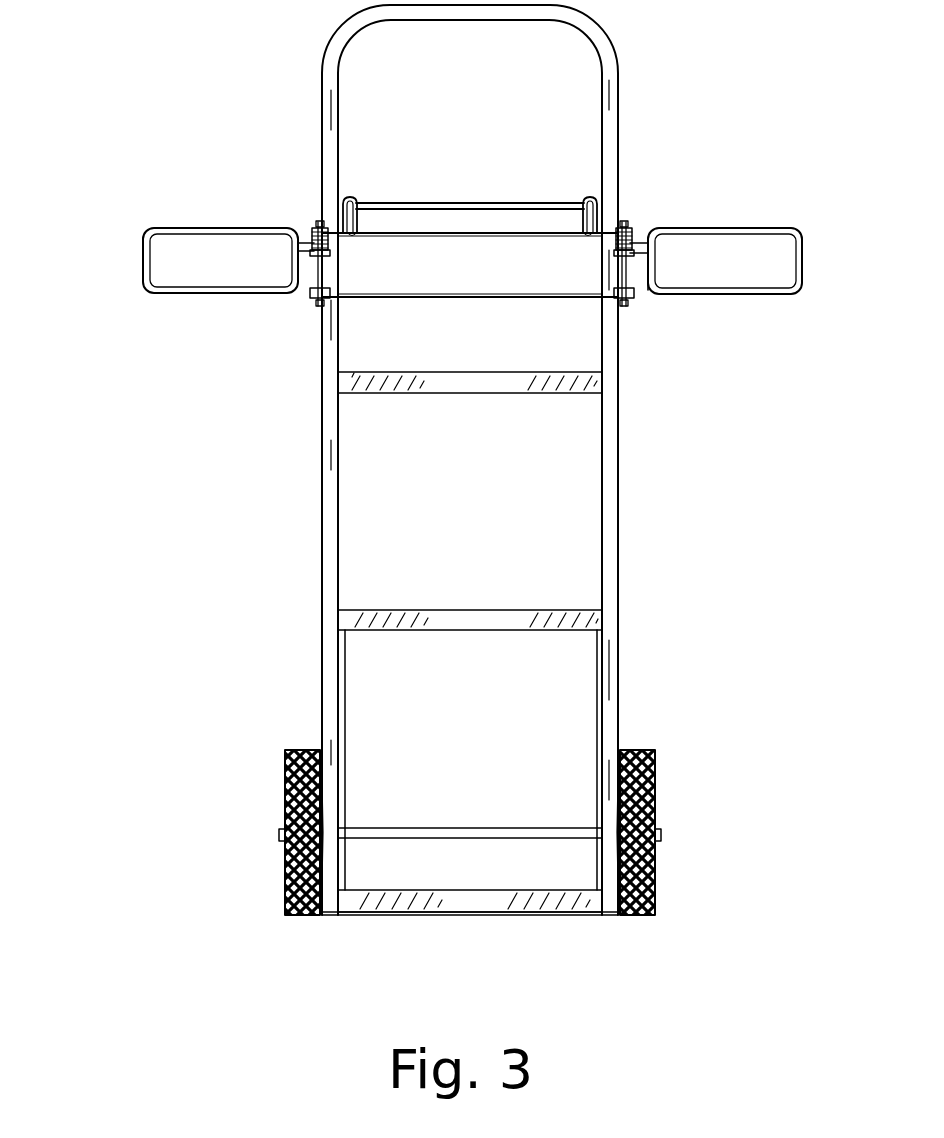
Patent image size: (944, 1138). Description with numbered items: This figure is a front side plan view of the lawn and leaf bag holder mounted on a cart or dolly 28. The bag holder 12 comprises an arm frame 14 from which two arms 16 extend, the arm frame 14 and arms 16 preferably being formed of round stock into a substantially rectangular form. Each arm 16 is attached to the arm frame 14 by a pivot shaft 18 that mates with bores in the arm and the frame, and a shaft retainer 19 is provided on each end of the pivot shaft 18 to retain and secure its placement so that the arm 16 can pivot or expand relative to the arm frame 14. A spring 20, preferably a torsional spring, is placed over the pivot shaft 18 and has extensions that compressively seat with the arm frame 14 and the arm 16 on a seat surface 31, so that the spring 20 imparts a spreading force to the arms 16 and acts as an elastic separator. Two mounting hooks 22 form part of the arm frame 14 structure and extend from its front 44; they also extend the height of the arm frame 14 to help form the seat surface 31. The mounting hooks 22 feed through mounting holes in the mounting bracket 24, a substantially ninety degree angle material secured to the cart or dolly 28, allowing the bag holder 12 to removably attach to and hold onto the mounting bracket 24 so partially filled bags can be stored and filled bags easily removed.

The bag holder 12 is at (470, 293).
The arm frame 14 is at (470, 293).
The arm 16 is at (143, 262).
The pivot shaft 18 is at (311, 270).
The shaft retainer 19 is at (320, 222).
The spring 20 is at (318, 229).
The mounting hook 22 is at (350, 197).
The mounting bracket 24 is at (472, 203).
The cart or dolly 28 is at (613, 675).
The seat surface 31 is at (298, 240).
The front of arm frame 44 is at (378, 298).